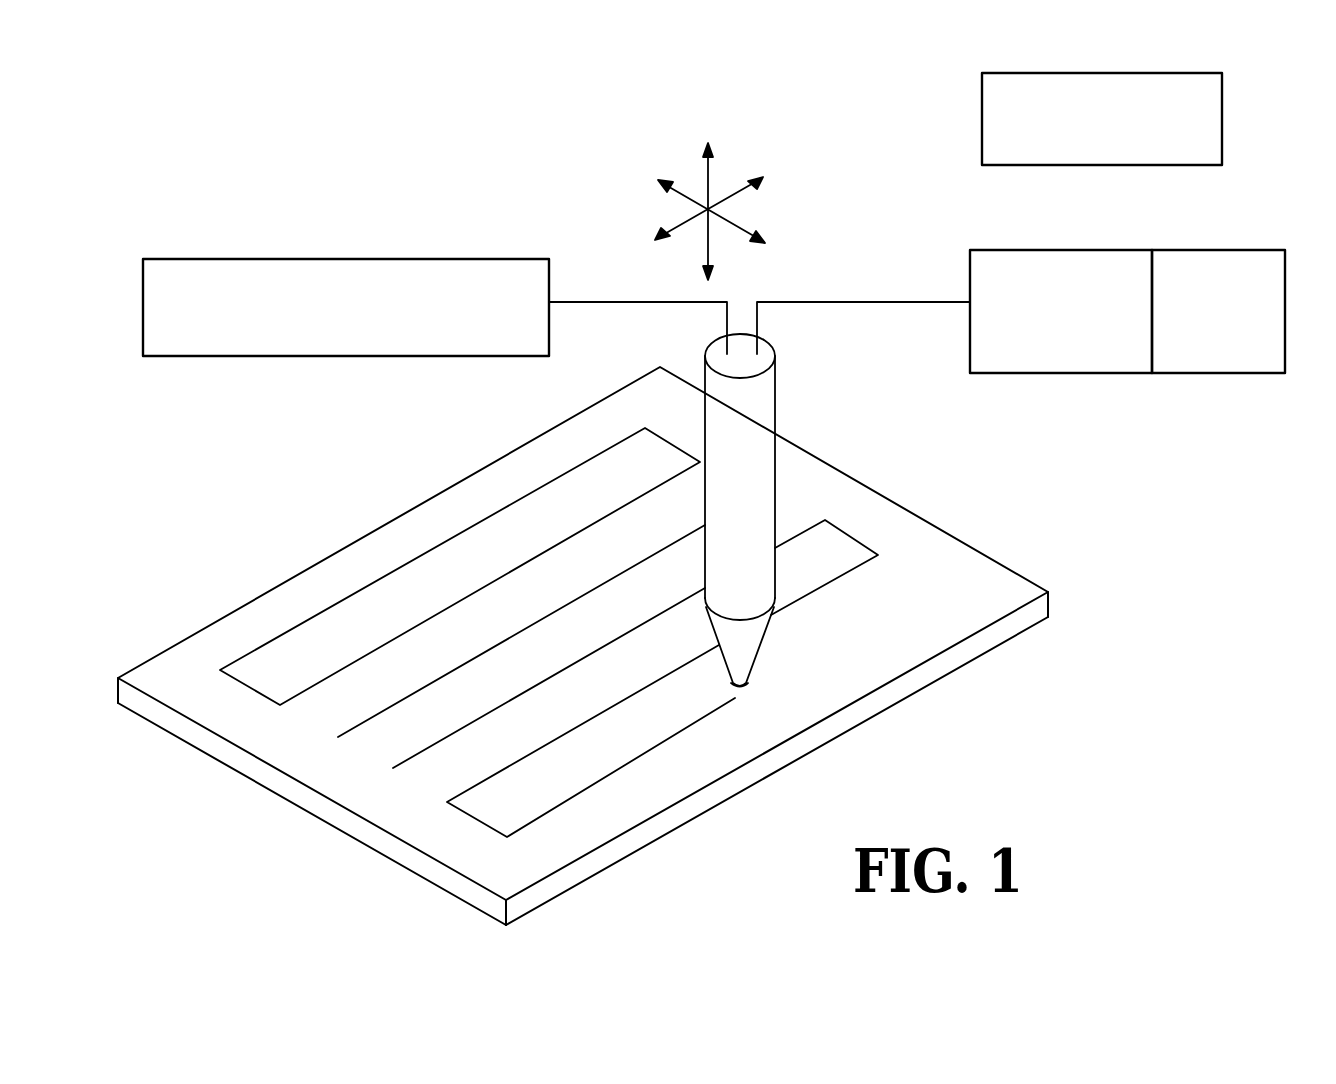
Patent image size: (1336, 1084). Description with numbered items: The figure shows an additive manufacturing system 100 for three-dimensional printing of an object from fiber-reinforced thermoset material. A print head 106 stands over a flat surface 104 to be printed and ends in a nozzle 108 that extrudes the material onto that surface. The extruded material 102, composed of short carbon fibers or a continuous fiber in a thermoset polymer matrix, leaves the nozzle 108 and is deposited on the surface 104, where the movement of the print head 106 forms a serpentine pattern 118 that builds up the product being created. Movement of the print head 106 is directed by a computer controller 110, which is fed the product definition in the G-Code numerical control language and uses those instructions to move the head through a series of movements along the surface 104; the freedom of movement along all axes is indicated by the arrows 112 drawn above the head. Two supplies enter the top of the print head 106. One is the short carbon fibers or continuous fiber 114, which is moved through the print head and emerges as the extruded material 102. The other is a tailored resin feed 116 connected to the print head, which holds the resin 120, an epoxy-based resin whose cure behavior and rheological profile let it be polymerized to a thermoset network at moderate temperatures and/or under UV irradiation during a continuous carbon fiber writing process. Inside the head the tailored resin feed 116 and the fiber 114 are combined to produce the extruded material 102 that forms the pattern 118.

The system 100 is at (520, 140).
The extruded material 102 is at (740, 687).
The surface 104 is at (975, 610).
The print head 106 is at (755, 418).
The nozzle 108 is at (758, 653).
The computer controller 110 is at (981, 117).
The arrows 112 is at (712, 177).
The short carbon fibers or continuous fiber 114 is at (420, 258).
The tailored resin feed 116 is at (1067, 375).
The pattern 118 is at (385, 575).
The resin 120 is at (1226, 375).